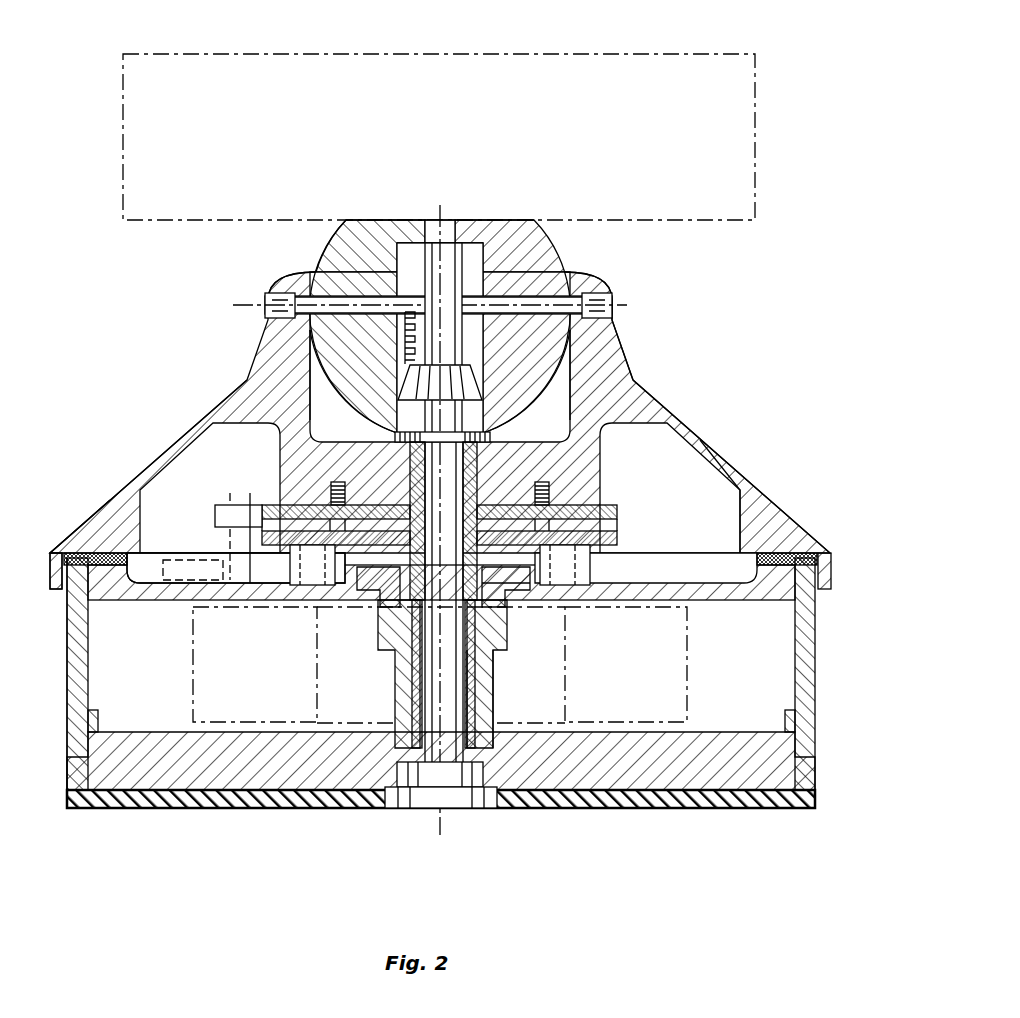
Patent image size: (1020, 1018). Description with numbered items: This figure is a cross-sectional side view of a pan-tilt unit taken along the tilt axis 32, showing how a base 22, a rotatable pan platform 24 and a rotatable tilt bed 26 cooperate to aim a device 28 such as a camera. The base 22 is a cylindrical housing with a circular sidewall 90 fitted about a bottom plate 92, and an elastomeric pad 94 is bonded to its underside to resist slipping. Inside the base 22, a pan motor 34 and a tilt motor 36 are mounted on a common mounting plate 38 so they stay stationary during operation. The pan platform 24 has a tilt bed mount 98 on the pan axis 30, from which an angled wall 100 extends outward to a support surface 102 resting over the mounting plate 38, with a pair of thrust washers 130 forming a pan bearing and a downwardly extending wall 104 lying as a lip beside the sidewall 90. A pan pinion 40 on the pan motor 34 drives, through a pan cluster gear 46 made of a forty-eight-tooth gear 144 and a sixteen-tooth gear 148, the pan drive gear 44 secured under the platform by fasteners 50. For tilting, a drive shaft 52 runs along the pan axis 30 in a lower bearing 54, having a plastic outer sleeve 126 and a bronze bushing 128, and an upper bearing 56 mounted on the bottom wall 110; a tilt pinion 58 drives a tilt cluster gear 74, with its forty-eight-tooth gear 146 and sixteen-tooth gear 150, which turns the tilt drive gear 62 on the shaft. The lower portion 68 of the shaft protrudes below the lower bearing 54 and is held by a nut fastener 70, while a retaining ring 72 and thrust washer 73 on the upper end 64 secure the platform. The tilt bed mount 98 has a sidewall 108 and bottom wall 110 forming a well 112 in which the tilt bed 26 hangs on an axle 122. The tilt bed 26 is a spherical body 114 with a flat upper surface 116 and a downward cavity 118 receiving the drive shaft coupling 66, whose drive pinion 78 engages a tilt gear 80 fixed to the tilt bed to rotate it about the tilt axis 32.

The base 22 is at (818, 680).
The pan platform 24 is at (683, 415).
The tilt bed 26 is at (566, 262).
The device 28 is at (640, 52).
The pan axis 30 is at (447, 832).
The tilt axis 32 is at (240, 303).
The pan motor 34 is at (193, 656).
The tilt motor 36 is at (687, 651).
The mounting plate 38 is at (747, 520).
The pan pinion 40 is at (262, 600).
The pan drive gear 44 is at (620, 512).
The pan cluster gear 46 is at (212, 518).
The fasteners 50 is at (335, 492).
The drive shaft 52 is at (418, 650).
The lower bearing 54 is at (392, 679).
The upper bearing 56 is at (560, 478).
The tilt pinion 58 is at (592, 560).
The tilt drive gear 62 is at (620, 540).
The upper end of the drive shaft 64 is at (388, 418).
The drive shaft coupling 66 is at (575, 368).
The lower portion of the drive shaft 68 is at (470, 757).
The fastener 70 is at (415, 808).
The retaining ring 72 is at (488, 420).
The thrust washer 73 is at (395, 437).
The tilt cluster gear 74 is at (562, 606).
The drive pinion 78 is at (478, 354).
The tilt gear 80 is at (420, 346).
The sidewall 90 is at (67, 655).
The bottom plate 92 is at (815, 774).
The elastomeric pad 94 is at (772, 808).
The tilt bed mount 98 is at (278, 278).
The angled wall 100 is at (200, 422).
The support surface 102 is at (80, 552).
The downwardly extending wall 104 is at (47, 575).
The sidewall 108 is at (310, 375).
The bottom wall 110 is at (600, 394).
The well 112 is at (580, 388).
The spherical body 114 is at (322, 246).
The flat upper surface 116 is at (375, 220).
The cavity 118 is at (460, 262).
The axle 122 is at (456, 300).
The outer sleeve 126 is at (495, 690).
The bushing 128 is at (495, 706).
The thrust washers 130 is at (78, 552).
The 48-tooth gear 144 is at (205, 555).
The 48-tooth gear 146 is at (366, 600).
The 16-tooth gear 148 is at (230, 492).
The 16-tooth gear 150 is at (527, 607).